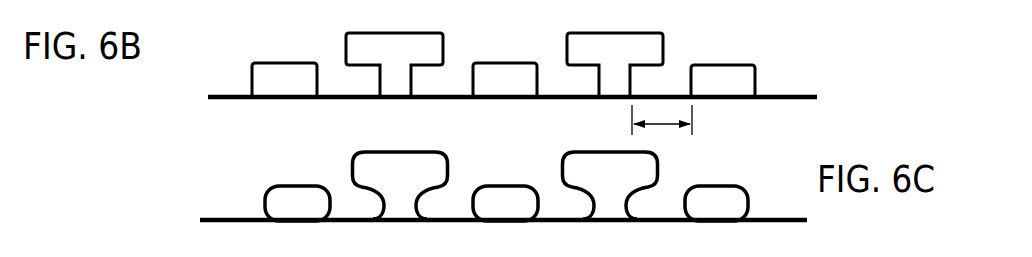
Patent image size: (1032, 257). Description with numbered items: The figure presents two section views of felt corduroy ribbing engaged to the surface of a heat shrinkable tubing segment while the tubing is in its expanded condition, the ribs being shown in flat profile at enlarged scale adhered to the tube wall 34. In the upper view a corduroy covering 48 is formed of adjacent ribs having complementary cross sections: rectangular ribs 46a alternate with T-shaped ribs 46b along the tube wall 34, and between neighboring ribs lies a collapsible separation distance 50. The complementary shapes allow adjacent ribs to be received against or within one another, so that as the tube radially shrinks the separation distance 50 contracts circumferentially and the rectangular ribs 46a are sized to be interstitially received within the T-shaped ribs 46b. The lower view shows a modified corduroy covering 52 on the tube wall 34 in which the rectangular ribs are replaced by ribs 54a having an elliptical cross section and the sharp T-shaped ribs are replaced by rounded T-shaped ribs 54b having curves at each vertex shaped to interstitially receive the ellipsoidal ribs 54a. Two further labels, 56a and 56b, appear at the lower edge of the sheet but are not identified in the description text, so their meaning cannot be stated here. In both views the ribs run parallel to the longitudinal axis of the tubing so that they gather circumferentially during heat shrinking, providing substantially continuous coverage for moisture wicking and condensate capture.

In FIG. 6B, the tube wall 34 is at (805, 95).
In FIG. 6C, the tube wall 34 is at (207, 217).
In FIG. 6B, the rectangular ribs 46a is at (723, 65).
In FIG. 6B, the T-shaped ribs 46b is at (618, 33).
In FIG. 6B, the corduroy covering 48 is at (322, 29).
In FIG. 6B, the collapsible separation distance 50 is at (663, 124).
In FIG. 6C, the corduroy covering 52 is at (452, 169).
In FIG. 6C, the ribs with elliptical cross section 54a is at (297, 185).
In FIG. 6C, the rounded T-shaped ribs 54b is at (400, 152).
In FIG. 6C, the feature 56a is at (768, 256).
In FIG. 6C, the feature 56b is at (662, 256).